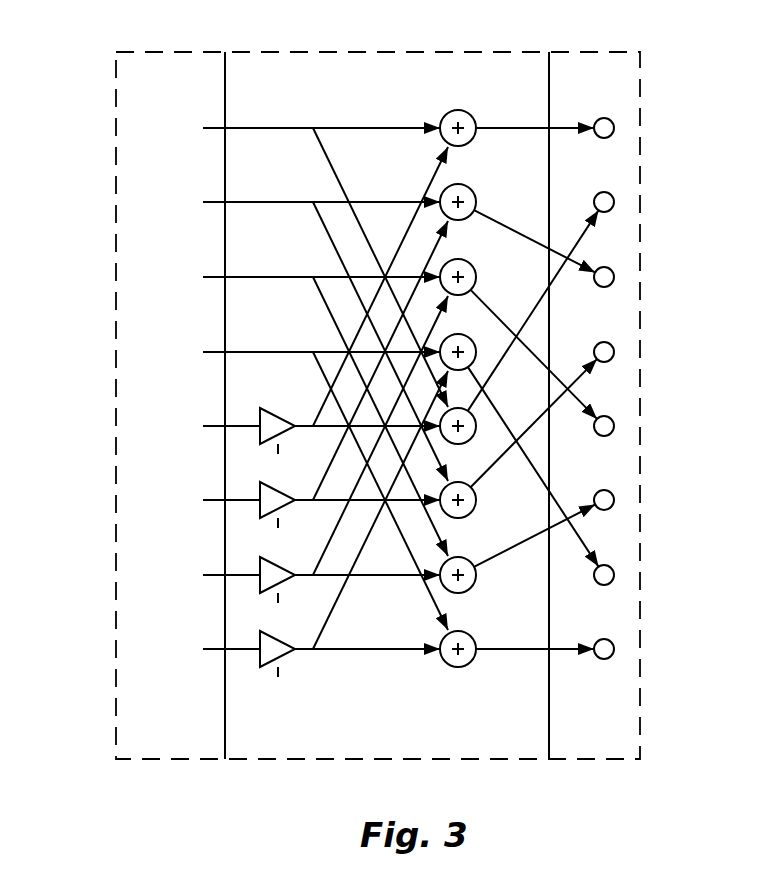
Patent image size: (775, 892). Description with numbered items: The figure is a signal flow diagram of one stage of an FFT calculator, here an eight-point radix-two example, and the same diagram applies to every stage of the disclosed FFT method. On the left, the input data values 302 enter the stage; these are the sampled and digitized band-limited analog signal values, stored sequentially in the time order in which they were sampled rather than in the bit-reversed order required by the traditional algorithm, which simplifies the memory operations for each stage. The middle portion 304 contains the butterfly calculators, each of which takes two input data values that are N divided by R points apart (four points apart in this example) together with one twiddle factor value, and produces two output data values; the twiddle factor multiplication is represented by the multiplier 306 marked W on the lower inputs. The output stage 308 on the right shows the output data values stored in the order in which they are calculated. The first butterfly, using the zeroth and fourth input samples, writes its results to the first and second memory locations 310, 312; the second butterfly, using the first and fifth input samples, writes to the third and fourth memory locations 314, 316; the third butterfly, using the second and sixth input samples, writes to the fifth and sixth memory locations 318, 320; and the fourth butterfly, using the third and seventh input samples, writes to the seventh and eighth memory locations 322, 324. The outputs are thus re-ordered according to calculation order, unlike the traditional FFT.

The input data values 302 is at (123, 52).
The butterfly computation stage 304 is at (428, 364).
The twiddle factor multiplier 306 is at (277, 676).
The output stage 308 is at (575, 52).
The first memory location 310 is at (612, 133).
The second memory location 312 is at (612, 207).
The third memory location 314 is at (612, 282).
The fourth memory location 316 is at (612, 357).
The fifth memory location 318 is at (612, 431).
The sixth memory location 320 is at (612, 505).
The seventh memory location 322 is at (612, 580).
The eighth memory location 324 is at (612, 654).